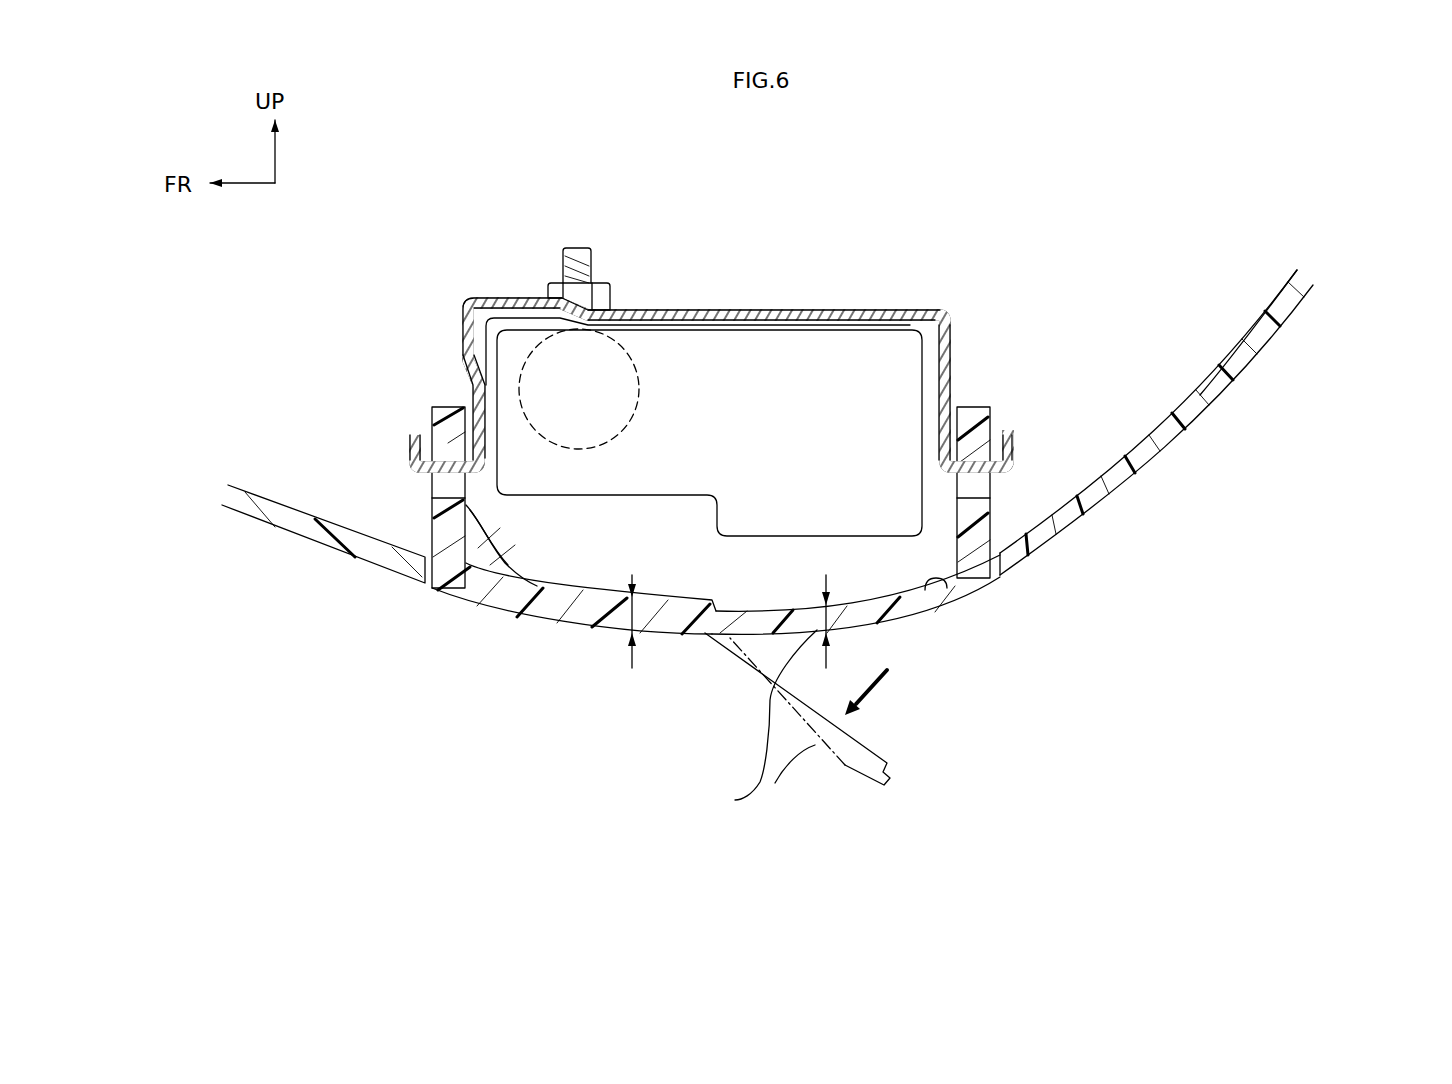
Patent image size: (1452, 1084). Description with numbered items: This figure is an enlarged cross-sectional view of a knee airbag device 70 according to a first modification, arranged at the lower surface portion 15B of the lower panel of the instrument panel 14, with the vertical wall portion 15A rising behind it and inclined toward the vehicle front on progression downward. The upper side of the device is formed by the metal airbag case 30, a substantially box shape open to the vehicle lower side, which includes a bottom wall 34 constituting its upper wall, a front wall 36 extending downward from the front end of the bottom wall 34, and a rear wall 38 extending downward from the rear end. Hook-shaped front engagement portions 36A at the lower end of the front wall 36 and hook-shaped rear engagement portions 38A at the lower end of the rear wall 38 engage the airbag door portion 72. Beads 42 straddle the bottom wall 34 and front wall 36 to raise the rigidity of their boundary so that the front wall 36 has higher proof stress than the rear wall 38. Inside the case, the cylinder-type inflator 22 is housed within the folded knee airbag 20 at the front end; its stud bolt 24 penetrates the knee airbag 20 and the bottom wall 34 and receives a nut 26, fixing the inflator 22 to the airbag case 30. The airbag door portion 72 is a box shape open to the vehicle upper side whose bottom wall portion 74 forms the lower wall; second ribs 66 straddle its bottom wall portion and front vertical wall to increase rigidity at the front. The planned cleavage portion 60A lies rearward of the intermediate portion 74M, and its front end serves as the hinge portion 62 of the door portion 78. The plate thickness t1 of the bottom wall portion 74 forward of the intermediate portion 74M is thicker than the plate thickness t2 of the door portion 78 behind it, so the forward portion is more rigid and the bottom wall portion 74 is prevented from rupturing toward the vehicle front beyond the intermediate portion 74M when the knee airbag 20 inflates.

The instrument panel 14 is at (1307, 316).
The vertical wall portion 15A is at (1218, 398).
The lower surface portion 15B is at (270, 528).
The knee airbag 20 is at (740, 326).
The inflator 22 is at (634, 352).
The stud bolt 24 is at (575, 246).
The nut 26 is at (610, 302).
The airbag case 30 is at (951, 283).
The bottom wall 34 is at (812, 309).
The front wall 36 is at (471, 381).
The front engagement portion 36A is at (410, 441).
The rear wall 38 is at (958, 355).
The rear engagement portion 38A is at (1013, 448).
The bead 42 is at (482, 297).
The bottom wall of resin member 60A is at (755, 611).
The hinge portion 62 is at (718, 603).
The second rib 66 is at (484, 556).
The knee airbag device 70 is at (919, 194).
The airbag door portion 72 is at (486, 642).
The bottom wall portion 74 is at (537, 630).
The intermediate portion 74M is at (682, 637).
The door portion 78 is at (760, 795).
The plate thickness t1 is at (628, 660).
The plate thickness t2 is at (828, 630).